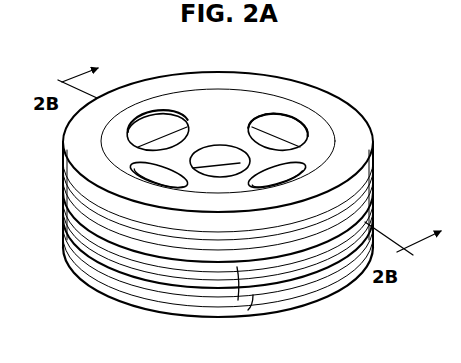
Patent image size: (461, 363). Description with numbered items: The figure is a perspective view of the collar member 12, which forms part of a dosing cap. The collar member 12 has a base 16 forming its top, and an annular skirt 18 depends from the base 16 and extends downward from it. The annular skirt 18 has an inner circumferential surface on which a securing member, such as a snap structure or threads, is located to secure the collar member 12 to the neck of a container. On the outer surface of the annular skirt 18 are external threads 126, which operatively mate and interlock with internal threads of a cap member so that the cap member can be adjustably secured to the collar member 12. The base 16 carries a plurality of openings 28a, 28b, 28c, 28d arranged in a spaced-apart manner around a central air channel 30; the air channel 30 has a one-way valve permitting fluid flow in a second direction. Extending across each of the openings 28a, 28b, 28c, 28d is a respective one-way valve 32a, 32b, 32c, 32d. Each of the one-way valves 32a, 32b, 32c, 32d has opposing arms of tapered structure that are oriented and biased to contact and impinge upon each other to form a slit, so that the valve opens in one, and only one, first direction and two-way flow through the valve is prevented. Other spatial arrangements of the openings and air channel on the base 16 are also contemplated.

The collar member 12 is at (370, 65).
The base 16 is at (267, 77).
The annular skirt 18 is at (108, 297).
The opening 28a is at (140, 164).
The opening 28b is at (156, 119).
The opening 28c is at (300, 136).
The opening 28d is at (310, 178).
The air channel 30 is at (217, 156).
The one-way valve 32a is at (132, 172).
The one-way valve 32b is at (172, 123).
The one-way valve 32c is at (287, 118).
The one-way valve 32d is at (303, 158).
The external threads 126 is at (238, 300).